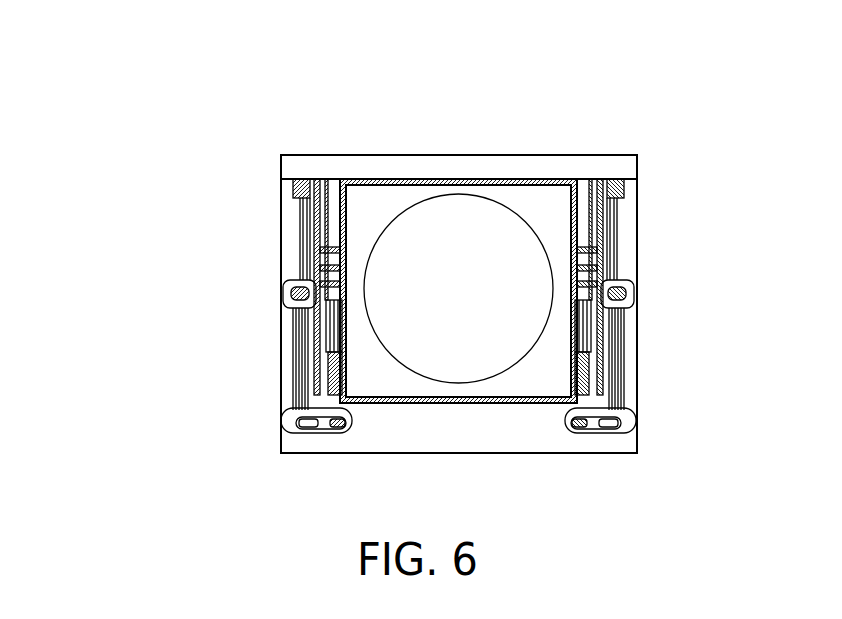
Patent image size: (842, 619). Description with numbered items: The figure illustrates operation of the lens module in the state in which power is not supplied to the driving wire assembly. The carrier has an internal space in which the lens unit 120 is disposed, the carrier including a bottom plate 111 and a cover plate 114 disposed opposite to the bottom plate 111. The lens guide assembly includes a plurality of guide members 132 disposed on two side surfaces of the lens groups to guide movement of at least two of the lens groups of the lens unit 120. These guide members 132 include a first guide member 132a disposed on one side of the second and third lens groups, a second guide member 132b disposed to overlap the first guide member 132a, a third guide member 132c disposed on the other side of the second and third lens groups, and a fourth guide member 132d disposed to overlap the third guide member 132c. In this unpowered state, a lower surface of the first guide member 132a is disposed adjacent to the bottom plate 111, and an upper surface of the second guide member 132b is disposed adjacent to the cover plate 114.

The bottom plate 111 is at (514, 443).
The cover plate 114 is at (613, 163).
The lens unit 120 is at (548, 197).
The guide members 132 is at (147, 19).
The first guide member 132a is at (295, 342).
The second guide member 132b is at (298, 263).
The third guide member 132c is at (613, 343).
The fourth guide member 132d is at (612, 263).